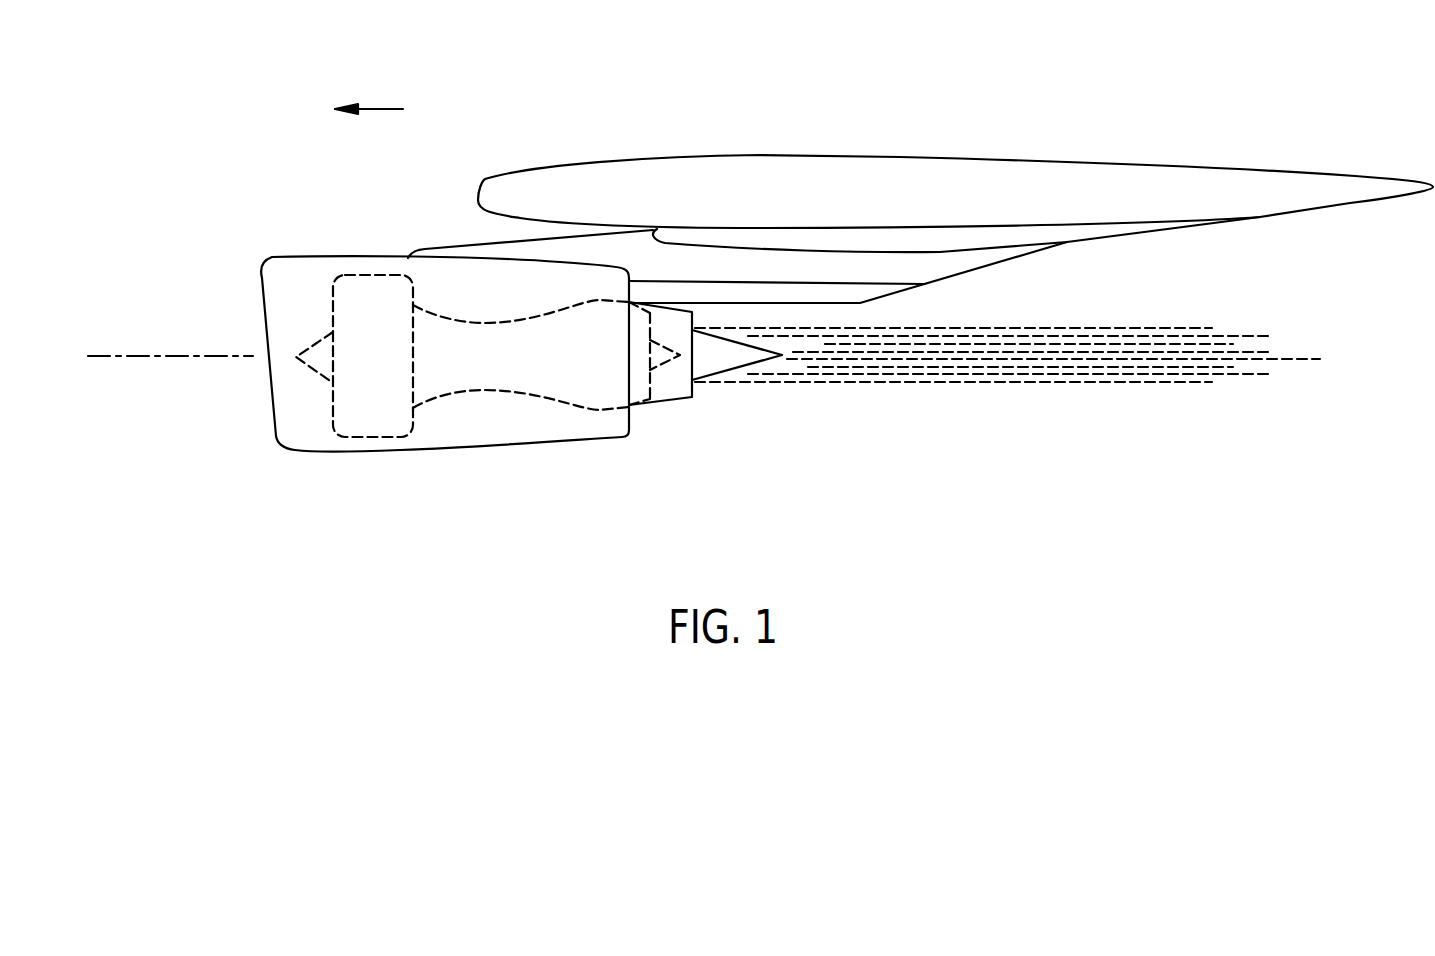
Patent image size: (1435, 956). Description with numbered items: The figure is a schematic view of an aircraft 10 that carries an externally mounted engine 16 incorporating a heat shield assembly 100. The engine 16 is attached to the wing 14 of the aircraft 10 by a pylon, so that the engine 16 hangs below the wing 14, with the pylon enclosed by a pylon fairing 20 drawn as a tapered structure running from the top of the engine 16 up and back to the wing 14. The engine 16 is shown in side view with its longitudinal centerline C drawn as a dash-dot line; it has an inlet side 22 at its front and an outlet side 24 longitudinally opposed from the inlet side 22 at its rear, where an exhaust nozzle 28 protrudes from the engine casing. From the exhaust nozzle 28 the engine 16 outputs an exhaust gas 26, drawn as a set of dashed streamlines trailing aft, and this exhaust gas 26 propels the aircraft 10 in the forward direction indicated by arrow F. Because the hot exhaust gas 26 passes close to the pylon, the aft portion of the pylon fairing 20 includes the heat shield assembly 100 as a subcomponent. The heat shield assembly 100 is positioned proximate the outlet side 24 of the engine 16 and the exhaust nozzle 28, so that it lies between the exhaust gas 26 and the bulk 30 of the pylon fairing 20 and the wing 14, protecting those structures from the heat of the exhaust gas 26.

The aircraft 10 is at (1283, 92).
The wing 14 is at (883, 157).
The engine 16 is at (433, 450).
The pylon fairing 20 is at (440, 252).
The inlet side 22 is at (247, 465).
The outlet side 24 is at (656, 468).
The exhaust gas 26 is at (1180, 328).
The exhaust nozzle 28 is at (663, 405).
The bulk of the pylon fairing 30 is at (977, 263).
The heat shield assembly 100 is at (870, 289).
The forward direction F is at (392, 109).
The engine centerline C is at (162, 357).